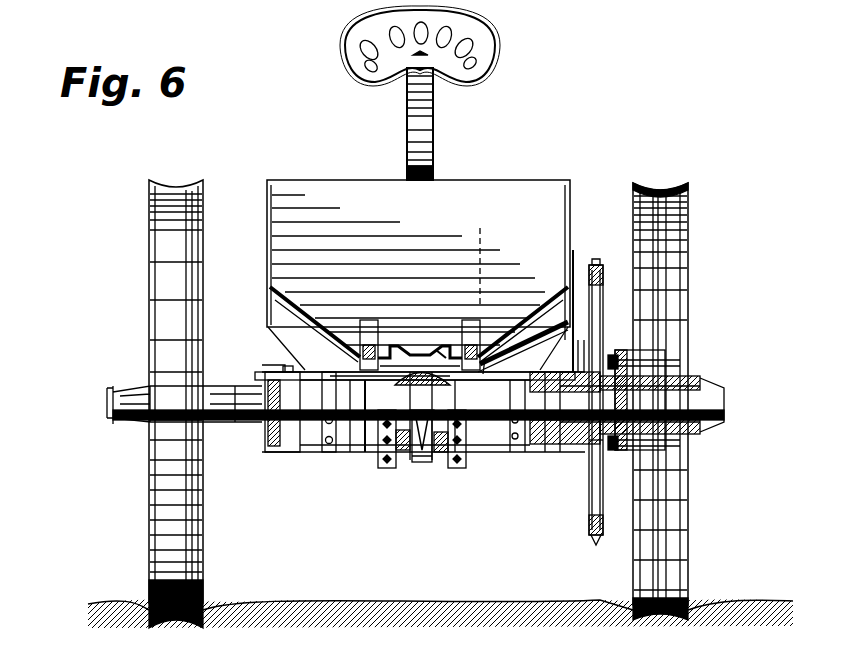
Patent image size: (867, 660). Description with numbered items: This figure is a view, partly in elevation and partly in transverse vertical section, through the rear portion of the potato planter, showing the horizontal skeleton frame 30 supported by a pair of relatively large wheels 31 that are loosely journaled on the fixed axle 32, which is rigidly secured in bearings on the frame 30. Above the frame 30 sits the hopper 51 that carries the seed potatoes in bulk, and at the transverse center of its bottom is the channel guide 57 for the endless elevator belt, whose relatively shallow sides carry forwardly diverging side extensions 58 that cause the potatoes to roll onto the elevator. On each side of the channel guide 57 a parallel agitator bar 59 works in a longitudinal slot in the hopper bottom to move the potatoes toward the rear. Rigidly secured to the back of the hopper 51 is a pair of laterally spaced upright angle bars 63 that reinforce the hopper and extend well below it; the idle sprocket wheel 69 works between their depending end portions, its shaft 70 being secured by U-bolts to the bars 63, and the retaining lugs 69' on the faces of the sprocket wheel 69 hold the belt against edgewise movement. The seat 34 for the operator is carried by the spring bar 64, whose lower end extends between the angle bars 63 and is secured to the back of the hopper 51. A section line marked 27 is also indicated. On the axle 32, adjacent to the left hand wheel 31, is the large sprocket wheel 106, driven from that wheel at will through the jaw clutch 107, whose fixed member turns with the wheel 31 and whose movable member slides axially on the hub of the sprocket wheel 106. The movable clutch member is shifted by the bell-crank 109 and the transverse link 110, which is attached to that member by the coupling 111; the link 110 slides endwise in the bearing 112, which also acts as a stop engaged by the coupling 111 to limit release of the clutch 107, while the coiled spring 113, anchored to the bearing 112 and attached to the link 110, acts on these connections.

The seat 34 is at (485, 42).
The spring bar 64 is at (432, 122).
The hopper 51 is at (285, 190).
The wheels 31 is at (165, 205).
The section line 27 is at (486, 351).
The agitator bars 59 is at (378, 334).
The channel guide 57 is at (400, 352).
The side extensions 58 is at (440, 348).
The coiled spring 113 is at (514, 366).
The bearing 112 is at (556, 370).
The coupling 111 is at (570, 372).
The sprocket wheel 106 is at (601, 266).
The jaw clutch 107 is at (593, 455).
The frame 30 is at (276, 450).
The bell-crank 109 is at (302, 372).
The link 110 is at (340, 420).
The axle 32 is at (368, 420).
The angle bars 63 is at (384, 468).
The shaft 70 is at (408, 455).
The idle sprocket wheel 69 is at (437, 474).
The retaining lugs 69' is at (418, 474).